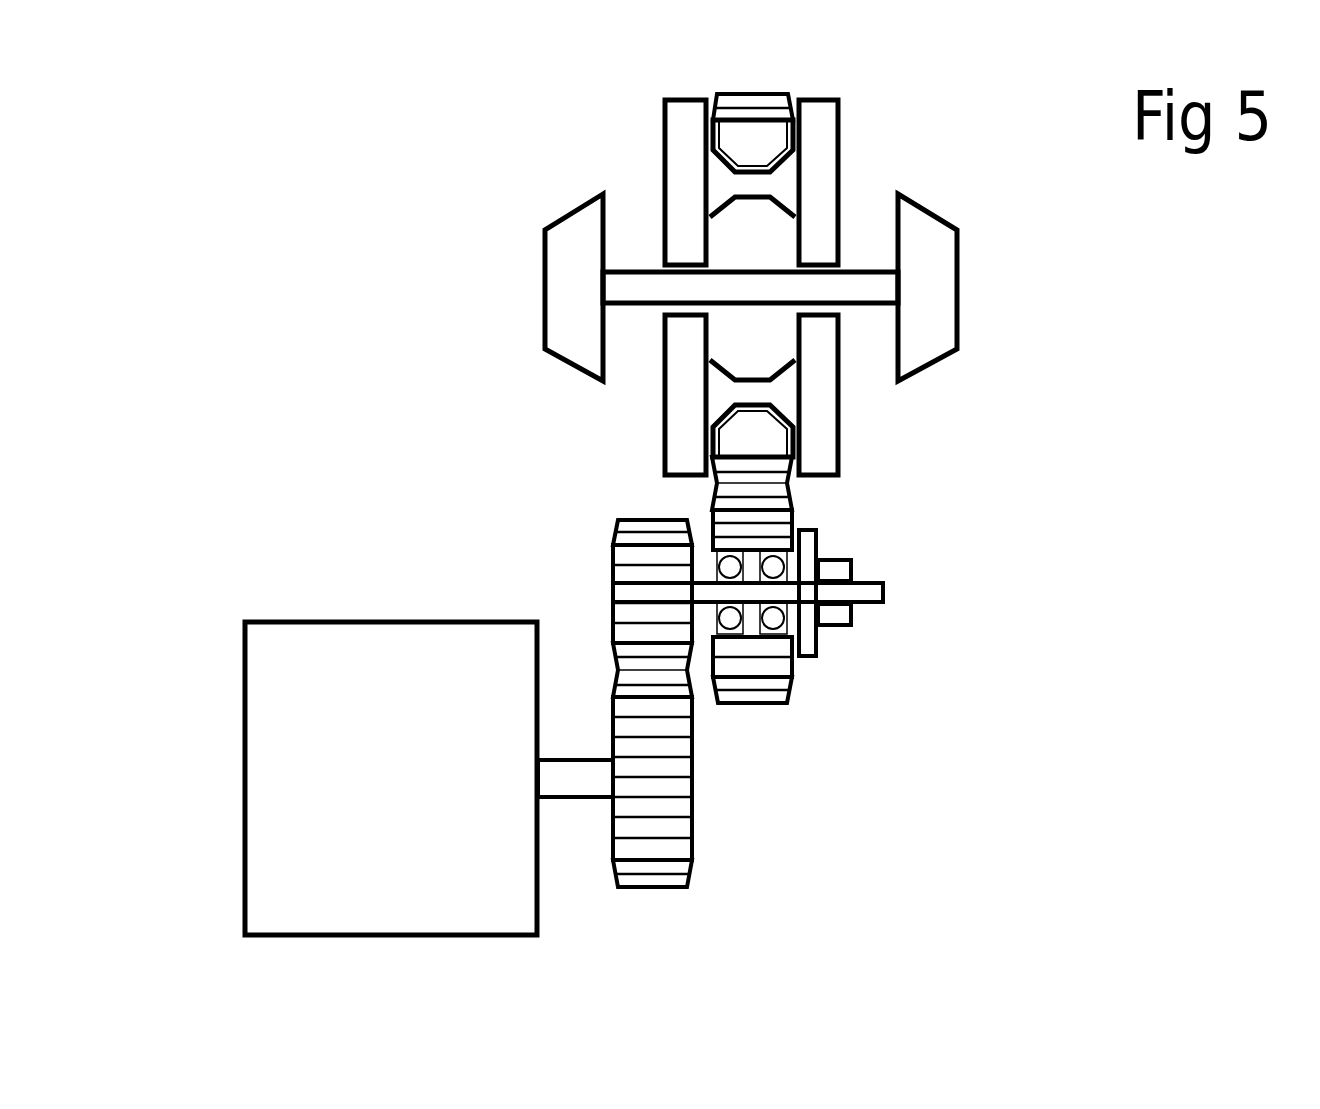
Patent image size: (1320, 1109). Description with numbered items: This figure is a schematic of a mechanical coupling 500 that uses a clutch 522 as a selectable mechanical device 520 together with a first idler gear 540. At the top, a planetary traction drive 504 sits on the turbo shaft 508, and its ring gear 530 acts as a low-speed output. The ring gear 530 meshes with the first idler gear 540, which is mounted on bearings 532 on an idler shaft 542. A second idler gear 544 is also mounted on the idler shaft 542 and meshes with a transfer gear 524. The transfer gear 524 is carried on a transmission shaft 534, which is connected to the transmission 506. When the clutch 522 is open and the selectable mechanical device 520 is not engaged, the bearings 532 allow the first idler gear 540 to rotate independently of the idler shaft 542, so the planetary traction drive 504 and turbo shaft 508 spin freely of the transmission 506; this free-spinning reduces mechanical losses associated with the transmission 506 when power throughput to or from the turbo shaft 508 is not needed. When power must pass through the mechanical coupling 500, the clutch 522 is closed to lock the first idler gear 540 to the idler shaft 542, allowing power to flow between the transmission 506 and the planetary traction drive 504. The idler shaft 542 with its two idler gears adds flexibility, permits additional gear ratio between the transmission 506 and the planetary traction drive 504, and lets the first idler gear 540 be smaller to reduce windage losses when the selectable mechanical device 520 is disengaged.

The mechanical coupling 500 is at (637, 528).
The planetary traction drive 504 is at (777, 298).
The transmission 506 is at (391, 778).
The turbo shaft 508 is at (680, 194).
The selectable mechanical device 520 is at (972, 542).
The clutch 522 is at (934, 599).
The transfer gear 524 is at (736, 845).
The ring gear 530 is at (604, 408).
The bearings 532 is at (772, 697).
The transmission shaft 534 is at (460, 645).
The first idler gear 540 is at (851, 700).
The idler shaft 542 is at (867, 680).
The second idler gear 544 is at (483, 535).